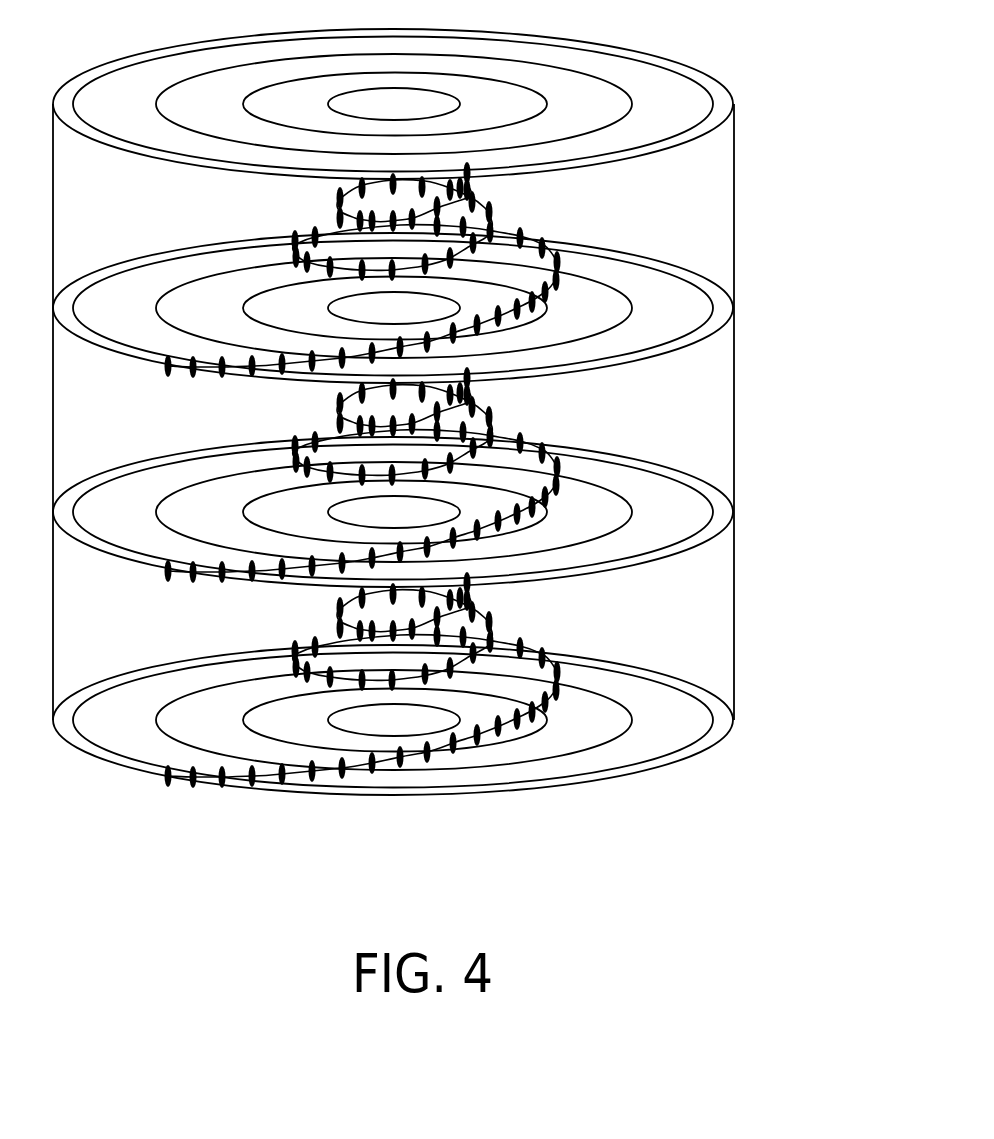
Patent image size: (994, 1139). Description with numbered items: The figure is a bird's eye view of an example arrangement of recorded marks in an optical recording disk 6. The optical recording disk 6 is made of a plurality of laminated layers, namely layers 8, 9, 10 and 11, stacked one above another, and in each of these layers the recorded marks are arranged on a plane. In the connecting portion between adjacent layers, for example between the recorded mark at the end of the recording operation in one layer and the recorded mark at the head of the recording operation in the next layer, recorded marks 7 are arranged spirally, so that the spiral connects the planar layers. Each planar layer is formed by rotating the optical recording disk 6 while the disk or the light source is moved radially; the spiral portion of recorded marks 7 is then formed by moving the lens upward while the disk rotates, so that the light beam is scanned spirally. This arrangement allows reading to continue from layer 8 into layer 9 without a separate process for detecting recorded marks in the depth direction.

The optical recording disk 6 is at (693, 212).
The recorded marks 7 is at (493, 203).
The layer 8 is at (693, 95).
The layer 9 is at (692, 317).
The layer 10 is at (692, 523).
The layer 11 is at (692, 723).